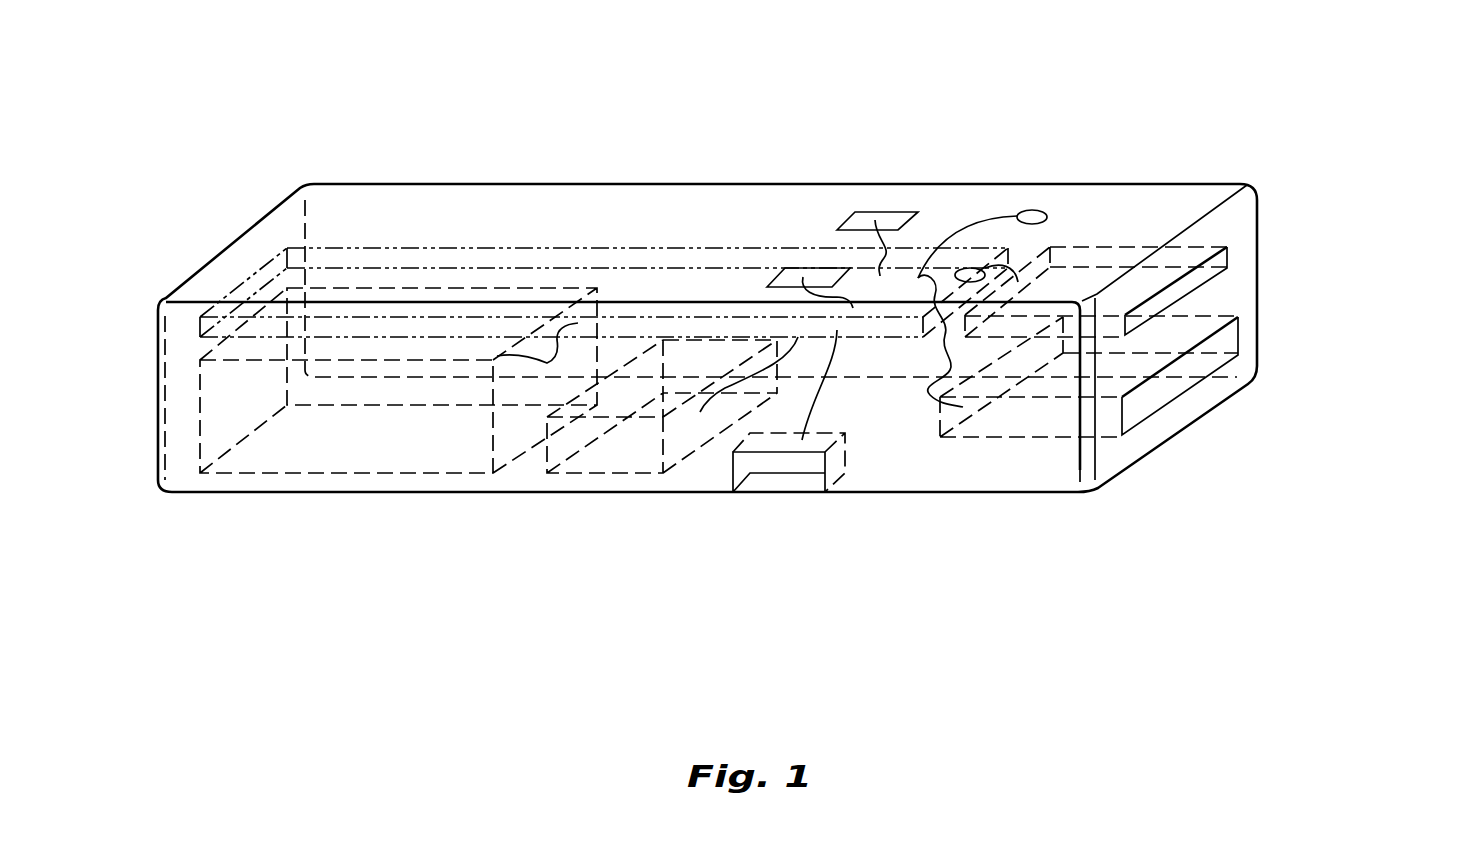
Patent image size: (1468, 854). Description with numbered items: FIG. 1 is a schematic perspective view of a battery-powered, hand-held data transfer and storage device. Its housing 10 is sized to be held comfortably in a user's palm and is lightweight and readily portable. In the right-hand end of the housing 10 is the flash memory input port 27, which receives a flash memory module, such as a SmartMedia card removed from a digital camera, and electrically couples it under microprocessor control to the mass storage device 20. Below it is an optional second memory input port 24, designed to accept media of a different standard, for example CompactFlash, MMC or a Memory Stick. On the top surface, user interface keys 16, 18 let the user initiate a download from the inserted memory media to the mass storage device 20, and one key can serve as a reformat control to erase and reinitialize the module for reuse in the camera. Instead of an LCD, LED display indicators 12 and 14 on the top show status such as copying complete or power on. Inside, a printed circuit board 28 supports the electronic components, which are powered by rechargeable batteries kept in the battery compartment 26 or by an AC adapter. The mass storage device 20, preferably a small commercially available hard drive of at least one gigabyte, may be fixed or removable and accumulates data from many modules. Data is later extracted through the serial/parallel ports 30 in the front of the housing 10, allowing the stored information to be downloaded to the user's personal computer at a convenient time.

The housing 10 is at (440, 178).
The display indicator 12 is at (1042, 123).
The display indicator 14 is at (1075, 62).
The user interface key 16 is at (846, 223).
The user interface key 18 is at (784, 268).
The mass storage device 20 is at (337, 466).
The optional second memory input port 24 is at (1181, 386).
The battery compartment 26 is at (607, 470).
The flash memory input port 27 is at (1223, 250).
The printed circuit board 28 is at (880, 362).
The serial/parallel ports 30 is at (780, 494).